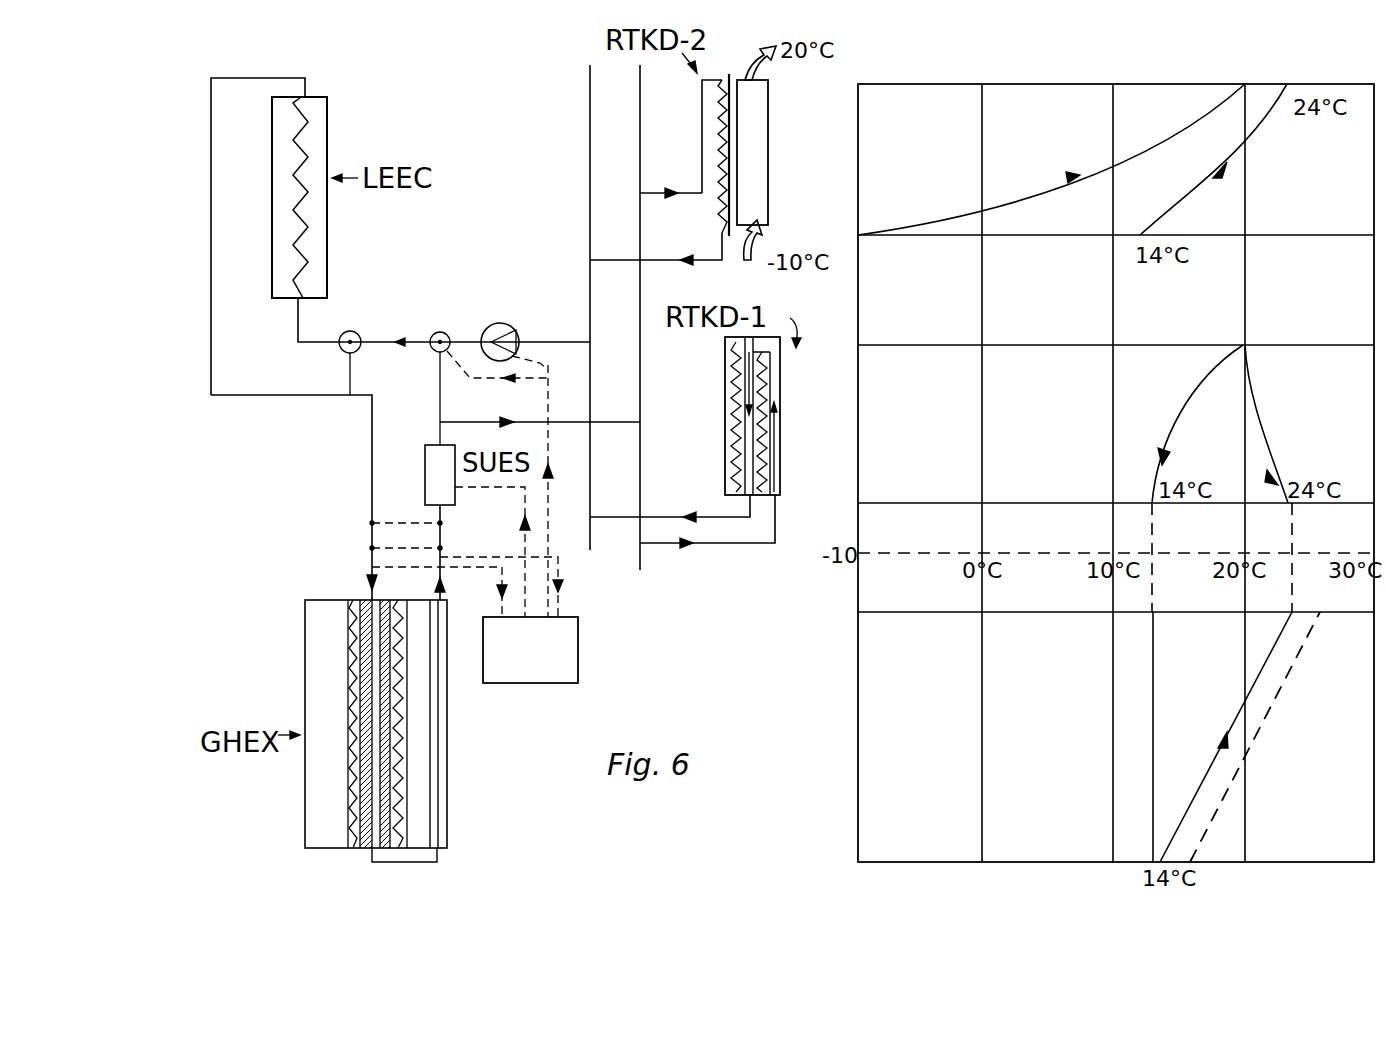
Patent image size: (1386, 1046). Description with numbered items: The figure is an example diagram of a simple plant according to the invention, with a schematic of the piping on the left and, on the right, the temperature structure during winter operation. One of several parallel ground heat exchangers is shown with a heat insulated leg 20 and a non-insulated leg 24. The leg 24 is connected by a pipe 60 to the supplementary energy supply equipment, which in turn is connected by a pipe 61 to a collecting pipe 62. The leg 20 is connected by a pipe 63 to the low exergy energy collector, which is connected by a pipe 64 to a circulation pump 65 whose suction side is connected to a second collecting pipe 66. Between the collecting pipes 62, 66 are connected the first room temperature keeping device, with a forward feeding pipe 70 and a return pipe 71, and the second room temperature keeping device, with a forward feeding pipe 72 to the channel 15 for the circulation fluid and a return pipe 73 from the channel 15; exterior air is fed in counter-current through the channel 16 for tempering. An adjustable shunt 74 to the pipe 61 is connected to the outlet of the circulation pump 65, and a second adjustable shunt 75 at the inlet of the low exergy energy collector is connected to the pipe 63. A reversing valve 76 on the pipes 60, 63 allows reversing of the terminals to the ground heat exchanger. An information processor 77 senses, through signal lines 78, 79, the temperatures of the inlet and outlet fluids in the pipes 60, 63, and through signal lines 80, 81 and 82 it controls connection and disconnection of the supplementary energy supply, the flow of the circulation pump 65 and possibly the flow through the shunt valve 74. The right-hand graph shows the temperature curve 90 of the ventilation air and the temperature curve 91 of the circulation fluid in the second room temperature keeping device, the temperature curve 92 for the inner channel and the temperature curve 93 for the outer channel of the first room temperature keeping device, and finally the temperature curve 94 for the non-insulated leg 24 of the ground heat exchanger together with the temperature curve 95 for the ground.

The channel for the circulation fluid 15 is at (720, 119).
The channel for exterior air 16 is at (745, 128).
The heat insulated leg 20 is at (375, 672).
The non-insulated leg 24 is at (446, 771).
The pipe 60 is at (440, 590).
The pipe 61 is at (480, 420).
The collecting pipe 62 is at (642, 366).
The pipe 63 is at (262, 400).
The pipe 64 is at (296, 334).
The circulation pump 65 is at (522, 310).
The second collecting pipe 66 is at (589, 181).
The forward feeding pipe 70 is at (648, 545).
The return pipe 71 is at (625, 512).
The forward feeding pipe 72 is at (648, 196).
The return pipe 73 is at (623, 260).
The adjustable shunt 74 is at (441, 331).
The second adjustable shunt 75 is at (344, 335).
The reversing valve 76 is at (372, 538).
The information processor 77 is at (530, 650).
The signal line 78 is at (492, 570).
The signal line 79 is at (487, 558).
The signal line 80 is at (508, 487).
The signal line 81 is at (547, 537).
The signal line 82 is at (490, 380).
The temperature curve of the ventilation air 90 is at (1188, 123).
The temperature curve of the circulation fluid 91 is at (1210, 184).
The temperature curve for the inner channel 92 is at (1262, 458).
The temperature curve for the outer channel 93 is at (1184, 413).
The temperature curve for the non-insulated leg 94 is at (1236, 718).
The temperature curve for the ground 95 is at (1272, 712).